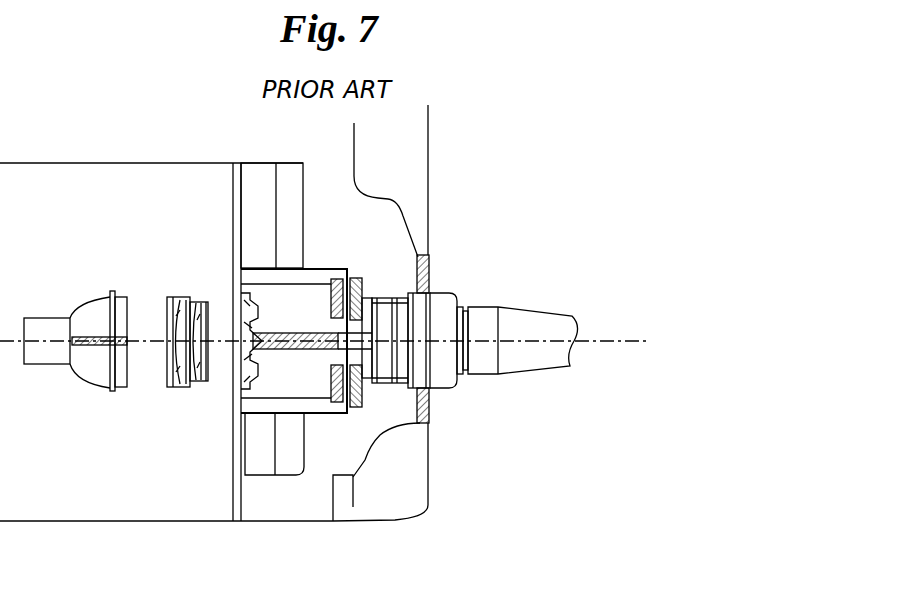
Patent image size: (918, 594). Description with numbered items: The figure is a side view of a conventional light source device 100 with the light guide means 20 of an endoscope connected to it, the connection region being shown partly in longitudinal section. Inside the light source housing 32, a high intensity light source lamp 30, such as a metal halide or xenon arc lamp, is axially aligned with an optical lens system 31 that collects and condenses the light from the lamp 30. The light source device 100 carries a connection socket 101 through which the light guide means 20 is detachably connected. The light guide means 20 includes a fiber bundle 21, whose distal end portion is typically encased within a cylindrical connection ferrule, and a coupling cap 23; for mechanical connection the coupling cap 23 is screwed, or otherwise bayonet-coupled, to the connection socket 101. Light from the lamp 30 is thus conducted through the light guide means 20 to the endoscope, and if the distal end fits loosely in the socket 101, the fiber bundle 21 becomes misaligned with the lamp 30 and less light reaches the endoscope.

The light guide means 20 is at (527, 304).
The fiber bundle 21 is at (300, 333).
The coupling cap 23 is at (437, 294).
The light source lamp 30 is at (93, 385).
The optical lens system 31 is at (177, 388).
The light source housing 32 is at (66, 522).
The light source device 100 is at (465, 193).
The connection socket 101 is at (347, 430).